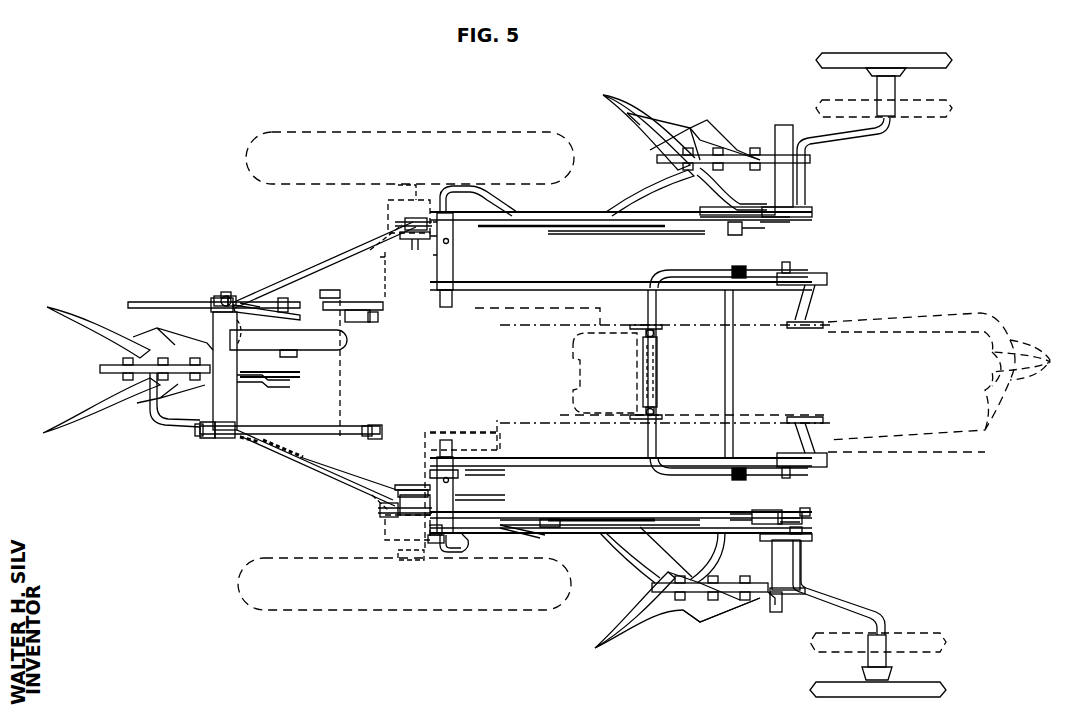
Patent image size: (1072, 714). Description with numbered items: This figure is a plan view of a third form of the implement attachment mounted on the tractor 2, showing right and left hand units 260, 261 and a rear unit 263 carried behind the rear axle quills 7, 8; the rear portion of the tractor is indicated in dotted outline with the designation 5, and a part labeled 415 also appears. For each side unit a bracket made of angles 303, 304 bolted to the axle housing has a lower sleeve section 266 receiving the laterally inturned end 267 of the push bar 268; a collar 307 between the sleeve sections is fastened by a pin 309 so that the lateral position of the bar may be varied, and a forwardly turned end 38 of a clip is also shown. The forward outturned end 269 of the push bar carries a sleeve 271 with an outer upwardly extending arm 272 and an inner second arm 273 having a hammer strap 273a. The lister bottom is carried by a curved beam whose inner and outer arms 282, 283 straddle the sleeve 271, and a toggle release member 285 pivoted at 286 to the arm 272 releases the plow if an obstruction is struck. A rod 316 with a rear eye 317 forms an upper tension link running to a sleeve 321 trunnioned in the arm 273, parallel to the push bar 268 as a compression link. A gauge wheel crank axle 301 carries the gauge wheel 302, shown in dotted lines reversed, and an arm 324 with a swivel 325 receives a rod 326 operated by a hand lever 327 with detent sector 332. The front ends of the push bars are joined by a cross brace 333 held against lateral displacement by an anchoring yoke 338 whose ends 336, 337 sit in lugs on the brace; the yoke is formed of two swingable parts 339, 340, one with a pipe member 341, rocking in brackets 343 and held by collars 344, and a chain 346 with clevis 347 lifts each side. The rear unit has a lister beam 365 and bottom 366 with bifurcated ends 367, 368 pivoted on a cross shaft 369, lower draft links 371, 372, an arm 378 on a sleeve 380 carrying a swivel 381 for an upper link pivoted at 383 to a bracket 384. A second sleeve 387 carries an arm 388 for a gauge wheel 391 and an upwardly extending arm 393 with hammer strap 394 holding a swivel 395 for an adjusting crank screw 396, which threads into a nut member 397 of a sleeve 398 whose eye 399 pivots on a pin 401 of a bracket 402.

The tractor 2 is at (894, 306).
The rear of tractor 5 is at (1037, 360).
The right rear axle quill 7 is at (370, 495).
The left rear axle quill 8 is at (372, 247).
The forwardly turned end 38 is at (404, 484).
The right hand unit 260 is at (647, 649).
The left hand unit 261 is at (641, 106).
The rear unit 263 is at (77, 448).
The lower sleeve section 266 is at (460, 548).
The laterally inturned end 267 is at (452, 450).
The push bar 268 is at (550, 518).
The laterally outwardly turned end 269 is at (777, 612).
The sleeve member 271 is at (790, 558).
The upwardly extending arm 272 is at (797, 580).
The second arm 273 is at (800, 541).
The hammer strap 273a is at (790, 512).
The laterally inner arm 282 is at (695, 568).
The laterally outer arm 283 is at (757, 600).
The toggle release member 285 is at (713, 612).
The pivot 286 is at (745, 580).
The gauge wheel crank axle 301 is at (845, 612).
The gauge wheel 302 is at (922, 680).
The angle 303 is at (410, 530).
The angle 304 is at (423, 470).
The collar 307 is at (485, 493).
The pin 309 is at (480, 500).
The rod 316 is at (567, 533).
The eye 317 is at (430, 540).
The sleeve 321 is at (766, 514).
The upwardly extending arm 324 is at (803, 513).
The swivel 325 is at (808, 518).
The rod 326 is at (705, 525).
The hand lever 327 is at (575, 518).
The detent sector means 332 is at (640, 530).
The transverse cross brace 333 is at (737, 378).
The yoke end 336 is at (690, 280).
The yoke end 337 is at (684, 432).
The anchoring yoke member 338 is at (668, 374).
The yoke part 339 is at (638, 317).
The yoke part 340 is at (638, 448).
The pipe member 341 is at (642, 380).
The bracket 343 is at (656, 326).
The collar 344 is at (660, 335).
The chain 346 is at (742, 274).
The clevis 347 is at (738, 284).
The rear lister beam 365 is at (176, 440).
The rear lister bottom 366 is at (135, 400).
The bifurcated structure section 367 is at (225, 365).
The bifurcated structure section 368 is at (193, 432).
The cross shaft 369 is at (222, 440).
The lower draft link 371 is at (333, 270).
The lower draft link 372 is at (332, 482).
The arm 378 is at (235, 416).
The sleeve 380 is at (218, 402).
The swivel 381 is at (405, 250).
The pivot 383 is at (370, 430).
The bracket 384 is at (250, 378).
The second sleeve 387 is at (218, 320).
The arm 388 is at (250, 300).
The gauge wheel 391 is at (315, 340).
The upwardly extending arm 393 is at (220, 298).
The hammer strap 394 is at (224, 296).
The swivel 395 is at (232, 296).
The adjusting crank screw 396 is at (150, 303).
The nut member 397 is at (283, 300).
The sleeve member 398 is at (347, 325).
The eye 399 is at (375, 310).
The pin 401 is at (368, 320).
The bracket 402 is at (372, 298).
The bar 415 is at (290, 372).